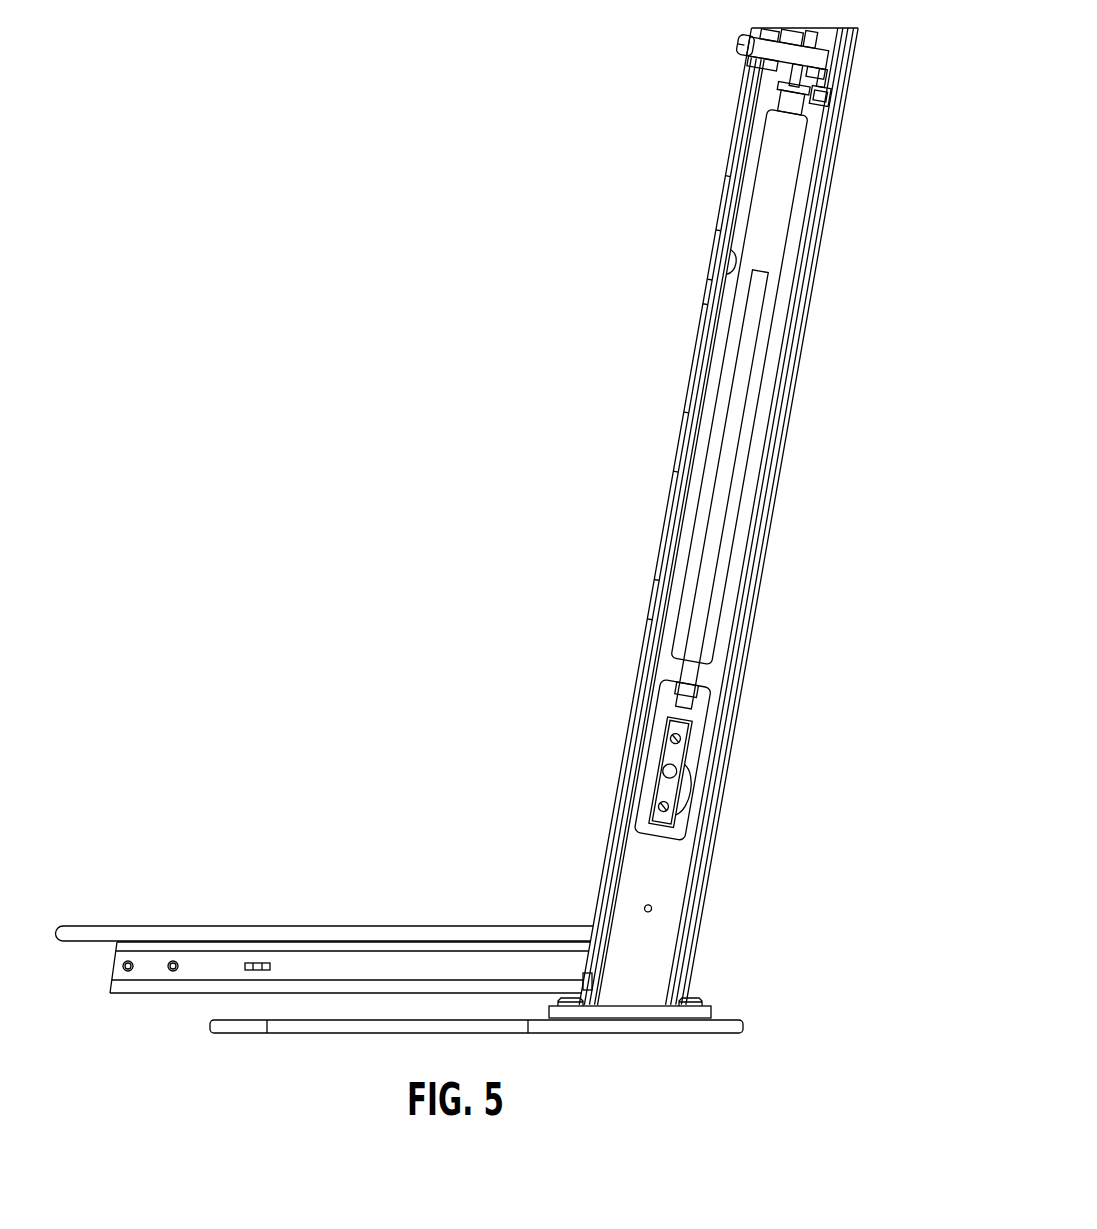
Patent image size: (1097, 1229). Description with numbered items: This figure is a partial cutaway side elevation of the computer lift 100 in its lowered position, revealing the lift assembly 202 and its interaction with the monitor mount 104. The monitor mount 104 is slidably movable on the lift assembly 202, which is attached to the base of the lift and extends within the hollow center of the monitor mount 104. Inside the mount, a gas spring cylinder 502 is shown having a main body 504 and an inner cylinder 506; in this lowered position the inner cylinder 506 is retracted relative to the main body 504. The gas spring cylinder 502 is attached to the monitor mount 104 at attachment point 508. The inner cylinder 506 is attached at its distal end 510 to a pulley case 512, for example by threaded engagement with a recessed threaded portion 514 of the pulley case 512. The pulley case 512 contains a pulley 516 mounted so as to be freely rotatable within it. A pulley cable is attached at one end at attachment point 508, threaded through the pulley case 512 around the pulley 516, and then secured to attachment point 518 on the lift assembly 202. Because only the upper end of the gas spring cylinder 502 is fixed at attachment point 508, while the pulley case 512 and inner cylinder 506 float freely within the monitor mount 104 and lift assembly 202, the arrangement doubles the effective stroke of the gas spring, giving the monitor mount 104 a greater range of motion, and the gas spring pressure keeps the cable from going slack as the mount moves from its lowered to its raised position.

The computer lift 100 is at (488, 521).
The monitor mount 104 is at (722, 196).
The lift assembly 202 is at (728, 281).
The gas spring cylinder 502 is at (790, 232).
The main body 504 is at (720, 617).
The inner cylinder 506 is at (700, 675).
The attachment point 508 is at (740, 47).
The distal end 510 is at (681, 681).
The pulley case 512 is at (657, 845).
The recessed threaded portion 514 is at (690, 700).
The pulley 516 is at (700, 757).
The attachment point 518 is at (829, 100).